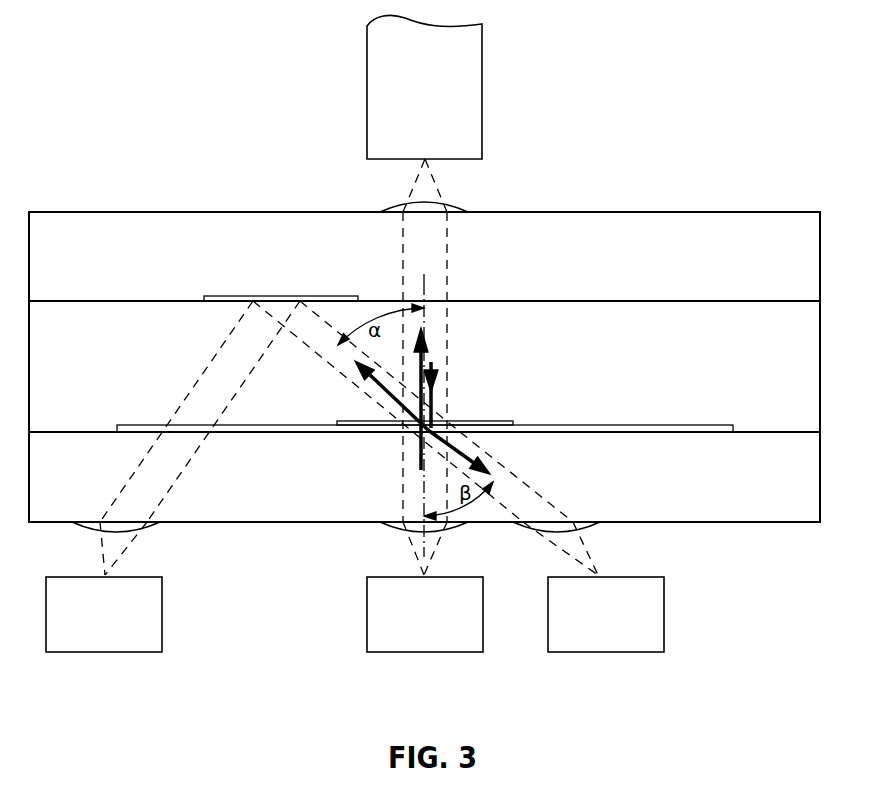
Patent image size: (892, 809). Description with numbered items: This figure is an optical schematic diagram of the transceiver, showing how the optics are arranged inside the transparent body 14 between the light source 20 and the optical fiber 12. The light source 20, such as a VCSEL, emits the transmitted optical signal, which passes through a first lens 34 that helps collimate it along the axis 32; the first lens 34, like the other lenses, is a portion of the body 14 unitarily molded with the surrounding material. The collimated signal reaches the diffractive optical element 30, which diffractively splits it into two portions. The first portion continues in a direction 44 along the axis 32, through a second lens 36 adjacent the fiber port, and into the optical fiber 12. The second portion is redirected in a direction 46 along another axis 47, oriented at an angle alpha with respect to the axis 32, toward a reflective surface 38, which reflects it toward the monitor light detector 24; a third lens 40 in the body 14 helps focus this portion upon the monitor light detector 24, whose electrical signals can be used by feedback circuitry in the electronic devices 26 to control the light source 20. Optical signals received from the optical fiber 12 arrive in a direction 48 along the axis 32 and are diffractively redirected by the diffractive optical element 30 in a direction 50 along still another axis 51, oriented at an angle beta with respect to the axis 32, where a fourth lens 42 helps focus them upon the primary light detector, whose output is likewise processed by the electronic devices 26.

The optical fiber 12 is at (367, 95).
The body 14 is at (204, 212).
The light source 20 is at (448, 652).
The monitor light detector 24 is at (128, 652).
The electronic devices 26 is at (664, 617).
The diffractive optical element 30 is at (480, 421).
The axis 32 is at (424, 282).
The first lens 34 is at (384, 527).
The second lens 36 is at (468, 210).
The reflective surface 38 is at (216, 301).
The third lens 40 is at (78, 530).
The fourth lens 42 is at (598, 527).
The direction 44 is at (428, 332).
The direction 46 is at (358, 372).
The another axis 47 is at (312, 336).
The direction 48 is at (436, 376).
The direction 50 is at (487, 452).
The still another axis 51 is at (520, 502).